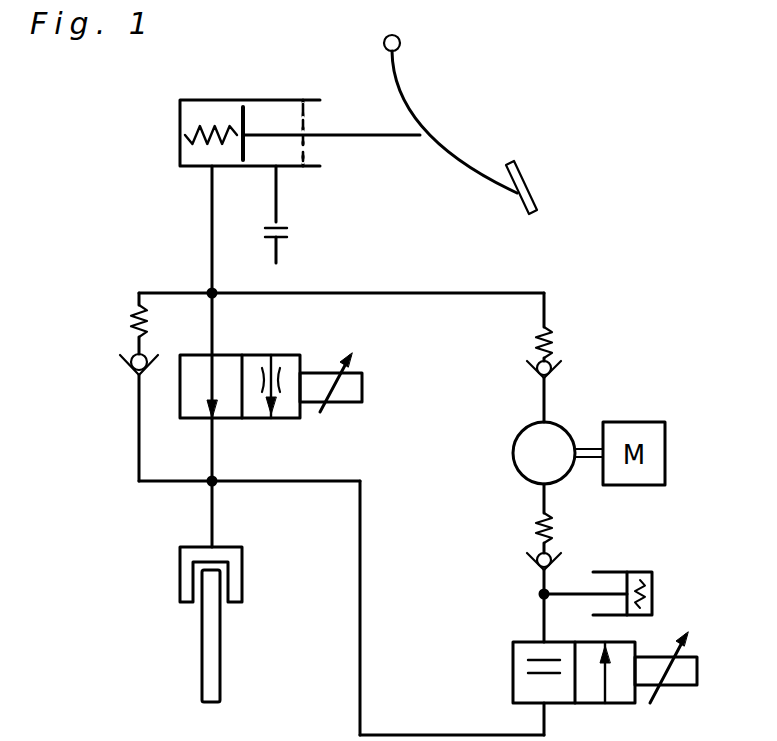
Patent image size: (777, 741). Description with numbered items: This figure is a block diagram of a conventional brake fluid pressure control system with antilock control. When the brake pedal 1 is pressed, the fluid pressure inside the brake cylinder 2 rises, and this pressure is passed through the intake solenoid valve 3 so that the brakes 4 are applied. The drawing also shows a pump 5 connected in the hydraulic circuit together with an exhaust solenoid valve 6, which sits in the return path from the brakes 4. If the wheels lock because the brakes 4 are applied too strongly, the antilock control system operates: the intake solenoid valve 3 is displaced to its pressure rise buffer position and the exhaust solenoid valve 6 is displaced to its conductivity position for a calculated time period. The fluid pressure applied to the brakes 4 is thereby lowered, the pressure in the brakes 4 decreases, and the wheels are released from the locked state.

The brake pedal 1 is at (468, 175).
The brake cylinder 2 is at (180, 117).
The intake solenoid valve 3 is at (180, 400).
The brakes 4 is at (202, 632).
The pump 5 is at (516, 438).
The exhaust solenoid valve 6 is at (513, 660).